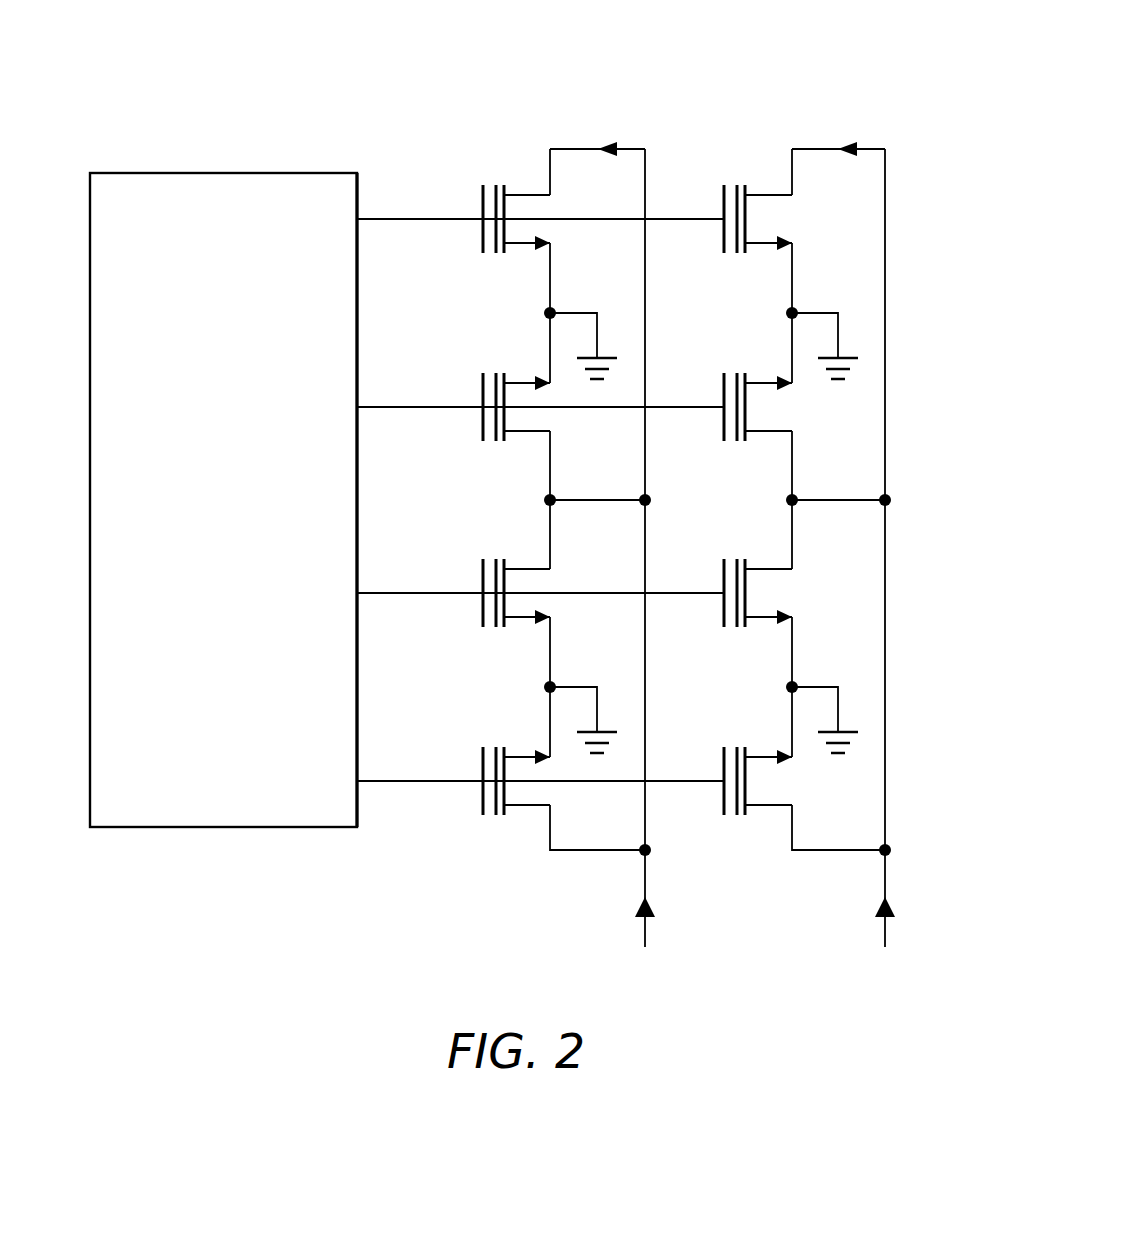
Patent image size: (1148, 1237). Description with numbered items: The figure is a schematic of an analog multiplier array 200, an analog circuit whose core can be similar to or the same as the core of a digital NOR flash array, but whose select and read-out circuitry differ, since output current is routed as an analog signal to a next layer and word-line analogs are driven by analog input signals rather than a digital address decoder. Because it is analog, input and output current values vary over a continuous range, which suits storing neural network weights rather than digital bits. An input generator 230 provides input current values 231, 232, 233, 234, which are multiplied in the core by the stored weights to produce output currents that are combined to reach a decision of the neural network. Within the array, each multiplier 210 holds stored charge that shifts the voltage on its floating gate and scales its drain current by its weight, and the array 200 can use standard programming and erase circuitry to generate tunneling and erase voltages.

The analog multiplier array 200 is at (798, 48).
The multiplier 210 is at (504, 133).
The input generator 230 is at (190, 846).
The input current value 231 is at (433, 183).
The input current value 232 is at (433, 370).
The input current value 233 is at (433, 558).
The input current value 234 is at (433, 745).